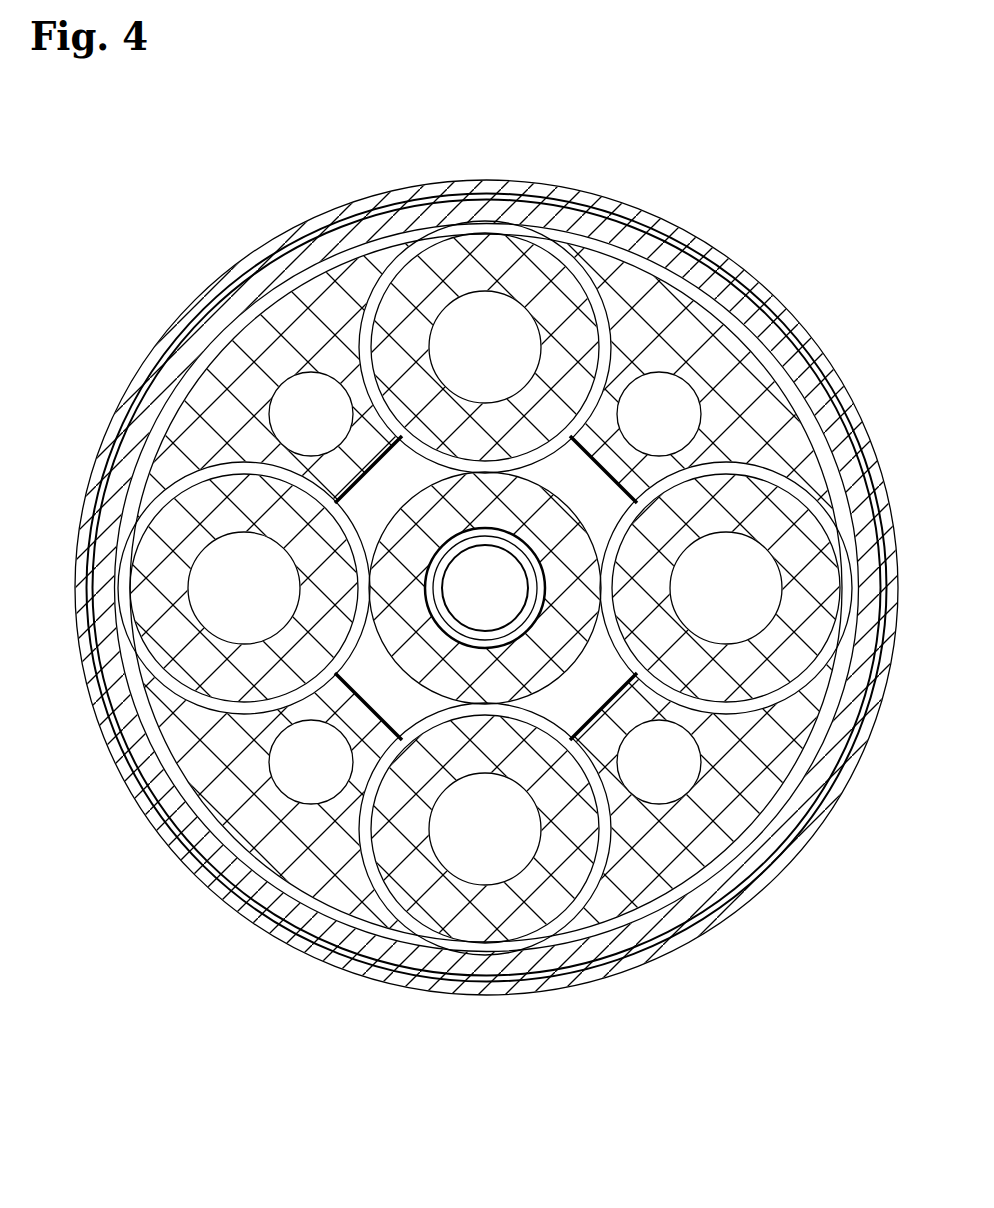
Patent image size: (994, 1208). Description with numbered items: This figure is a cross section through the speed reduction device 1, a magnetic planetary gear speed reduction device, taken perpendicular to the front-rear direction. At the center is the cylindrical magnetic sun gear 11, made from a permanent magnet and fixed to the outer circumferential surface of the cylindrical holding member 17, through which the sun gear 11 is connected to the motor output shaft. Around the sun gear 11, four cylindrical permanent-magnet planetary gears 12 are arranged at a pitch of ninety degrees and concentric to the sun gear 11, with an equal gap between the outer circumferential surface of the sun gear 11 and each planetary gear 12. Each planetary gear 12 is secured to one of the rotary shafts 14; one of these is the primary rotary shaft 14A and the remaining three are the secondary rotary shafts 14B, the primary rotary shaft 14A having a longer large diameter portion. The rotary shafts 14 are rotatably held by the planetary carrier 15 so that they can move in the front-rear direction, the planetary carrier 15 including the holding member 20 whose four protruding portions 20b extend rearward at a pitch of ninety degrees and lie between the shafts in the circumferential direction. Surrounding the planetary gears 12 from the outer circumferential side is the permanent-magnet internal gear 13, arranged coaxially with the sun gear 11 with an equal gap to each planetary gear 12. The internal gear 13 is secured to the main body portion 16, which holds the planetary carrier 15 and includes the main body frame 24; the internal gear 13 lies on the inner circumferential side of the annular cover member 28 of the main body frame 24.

The speed reduction device 1 is at (806, 150).
The magnetic sun gear 11 is at (532, 690).
The magnetic planetary gears 12 is at (615, 207).
The magnetic internal gear 13 is at (549, 212).
The rotary shafts 14 is at (487, 572).
The primary rotary shaft 14A is at (468, 290).
The secondary rotary shafts 14B is at (178, 452).
The planetary carrier 15 is at (662, 302).
The main body portion 16 is at (501, 190).
The holding member 17 is at (532, 535).
The holding member 20 is at (736, 335).
The protruding portions 20b is at (307, 317).
The main body frame 24 is at (350, 212).
The cover member 28 is at (487, 588).